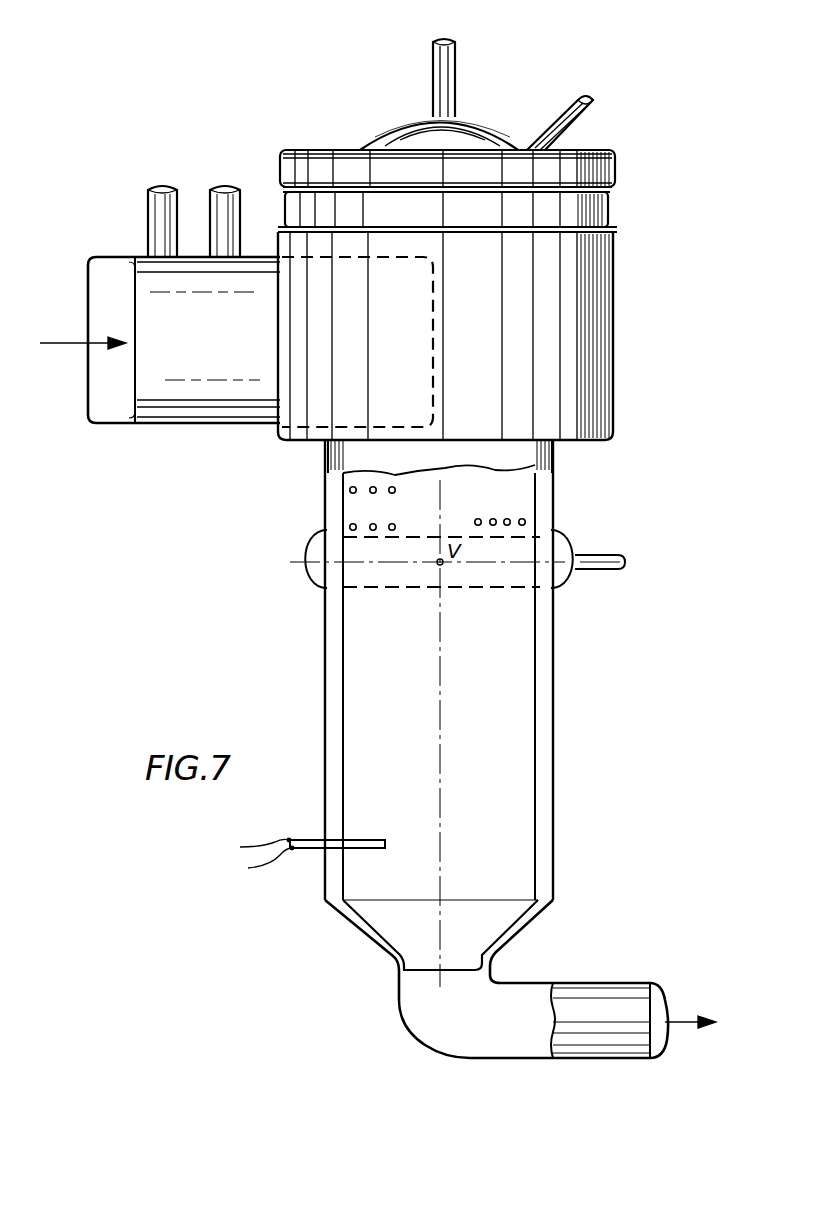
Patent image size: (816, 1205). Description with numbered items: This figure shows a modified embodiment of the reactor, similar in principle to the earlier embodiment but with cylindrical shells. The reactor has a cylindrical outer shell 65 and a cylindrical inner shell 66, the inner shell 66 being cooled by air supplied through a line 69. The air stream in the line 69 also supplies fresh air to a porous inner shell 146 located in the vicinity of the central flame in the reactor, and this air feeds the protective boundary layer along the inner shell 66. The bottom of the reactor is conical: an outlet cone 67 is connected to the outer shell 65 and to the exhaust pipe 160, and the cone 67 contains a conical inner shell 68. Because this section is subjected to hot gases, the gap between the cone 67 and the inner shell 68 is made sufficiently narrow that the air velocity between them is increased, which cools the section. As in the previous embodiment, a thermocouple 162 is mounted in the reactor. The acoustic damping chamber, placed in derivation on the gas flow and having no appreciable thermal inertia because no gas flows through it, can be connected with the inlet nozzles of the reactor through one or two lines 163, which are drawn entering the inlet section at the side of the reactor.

The reactor outer shell 65 is at (325, 718).
The inner shell 66 is at (343, 665).
The outlet cone 67 is at (363, 938).
The conical inner shell 68 is at (370, 926).
The line 69 is at (602, 557).
The porous inner shell 146 is at (535, 497).
The exhaust pipe 160 is at (400, 1020).
The thermocouple 162 is at (368, 840).
The lines 163 is at (160, 228).